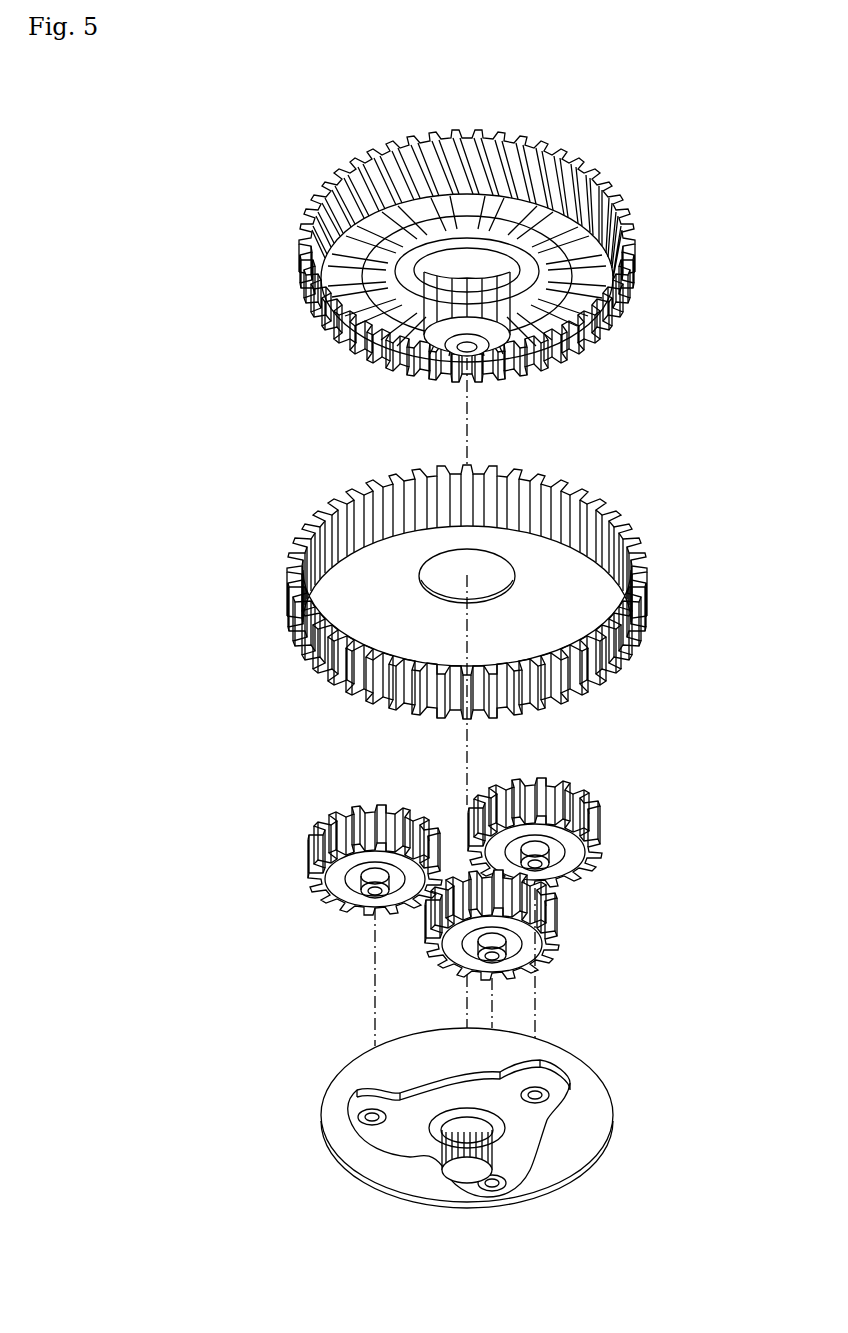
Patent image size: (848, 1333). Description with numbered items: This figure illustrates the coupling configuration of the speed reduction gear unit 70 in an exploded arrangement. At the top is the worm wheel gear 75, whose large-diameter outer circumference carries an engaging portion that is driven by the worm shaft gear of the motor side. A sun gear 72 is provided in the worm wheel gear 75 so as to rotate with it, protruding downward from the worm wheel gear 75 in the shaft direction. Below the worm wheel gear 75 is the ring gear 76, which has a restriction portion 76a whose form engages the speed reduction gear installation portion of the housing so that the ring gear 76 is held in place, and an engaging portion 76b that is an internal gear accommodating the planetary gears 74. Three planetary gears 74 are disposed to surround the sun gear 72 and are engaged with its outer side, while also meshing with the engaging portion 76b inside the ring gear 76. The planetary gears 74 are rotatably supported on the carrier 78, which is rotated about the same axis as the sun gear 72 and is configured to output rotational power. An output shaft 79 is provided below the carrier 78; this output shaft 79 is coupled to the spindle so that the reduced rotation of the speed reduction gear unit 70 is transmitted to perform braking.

The speed reduction gear unit 70 is at (493, 102).
The sun gear 72 is at (500, 307).
The planetary gears 74 is at (600, 828).
The worm wheel gear 75 is at (633, 247).
The ring gear 76 is at (522, 592).
The restriction portion 76a is at (645, 625).
The engaging portion 76b is at (623, 660).
The carrier 78 is at (585, 1145).
The output shaft 79 is at (467, 1178).